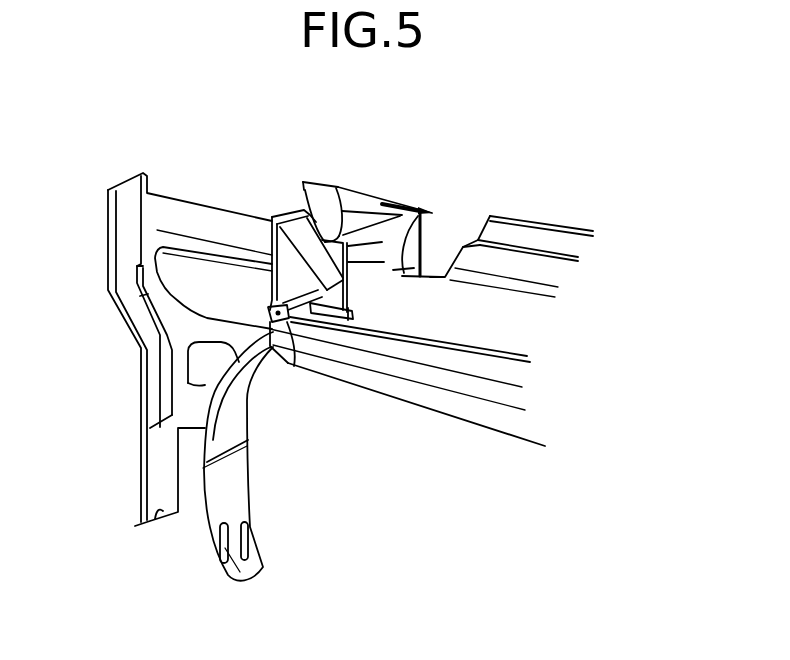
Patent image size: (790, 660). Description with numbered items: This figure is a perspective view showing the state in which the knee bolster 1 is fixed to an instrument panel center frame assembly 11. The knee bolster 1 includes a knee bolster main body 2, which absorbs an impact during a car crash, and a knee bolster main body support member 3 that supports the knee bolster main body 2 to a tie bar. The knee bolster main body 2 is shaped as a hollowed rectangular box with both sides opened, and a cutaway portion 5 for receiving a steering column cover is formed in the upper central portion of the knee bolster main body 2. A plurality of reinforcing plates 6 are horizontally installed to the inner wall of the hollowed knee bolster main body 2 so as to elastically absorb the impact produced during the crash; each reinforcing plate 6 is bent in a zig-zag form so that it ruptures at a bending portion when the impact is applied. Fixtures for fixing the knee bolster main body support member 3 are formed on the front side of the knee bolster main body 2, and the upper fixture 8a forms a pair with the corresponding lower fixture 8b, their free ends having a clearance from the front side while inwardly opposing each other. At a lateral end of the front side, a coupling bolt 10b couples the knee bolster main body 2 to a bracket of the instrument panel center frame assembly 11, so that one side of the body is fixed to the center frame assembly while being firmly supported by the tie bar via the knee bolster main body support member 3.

The knee bolster 1 is at (451, 295).
The knee bolster main body 2 is at (502, 308).
The knee bolster main body support member 3 is at (313, 180).
The cutaway portion 5 is at (445, 242).
The reinforcing plate 6 is at (441, 243).
The upper fixture 8a is at (378, 202).
The lower fixture 8b is at (353, 320).
The bolt 10b is at (294, 366).
The instrument panel center frame assembly 11 is at (123, 200).